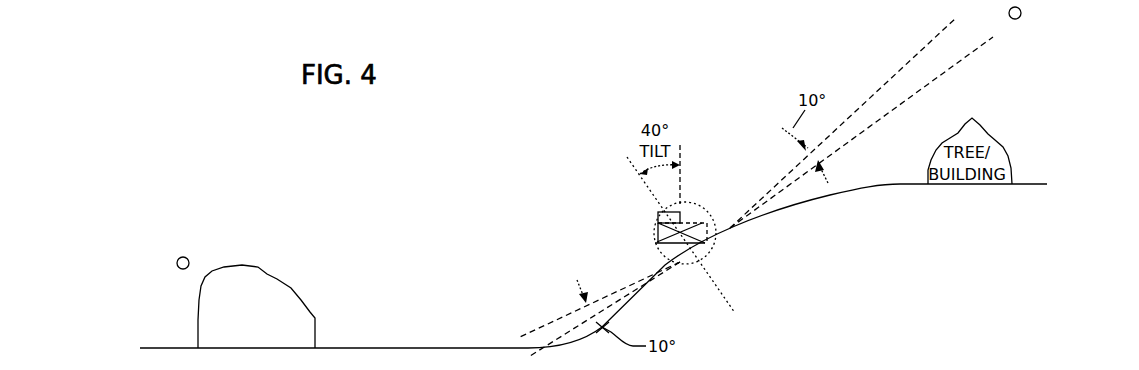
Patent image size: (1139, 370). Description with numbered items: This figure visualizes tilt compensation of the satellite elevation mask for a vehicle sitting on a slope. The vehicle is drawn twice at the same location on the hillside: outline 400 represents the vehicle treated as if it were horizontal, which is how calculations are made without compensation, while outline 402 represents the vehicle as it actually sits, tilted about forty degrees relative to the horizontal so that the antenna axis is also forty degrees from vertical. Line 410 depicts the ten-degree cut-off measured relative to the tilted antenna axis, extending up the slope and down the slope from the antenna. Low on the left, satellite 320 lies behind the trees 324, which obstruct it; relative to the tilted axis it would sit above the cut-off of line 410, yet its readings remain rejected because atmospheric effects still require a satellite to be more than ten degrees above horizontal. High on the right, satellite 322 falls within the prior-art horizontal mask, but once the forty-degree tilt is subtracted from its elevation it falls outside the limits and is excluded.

The satellite 320 is at (181, 269).
The satellite 322 is at (1018, 19).
The trees 324 is at (315, 318).
The outline 400 is at (657, 237).
The outline 402 is at (716, 212).
The line 410 is at (783, 175).